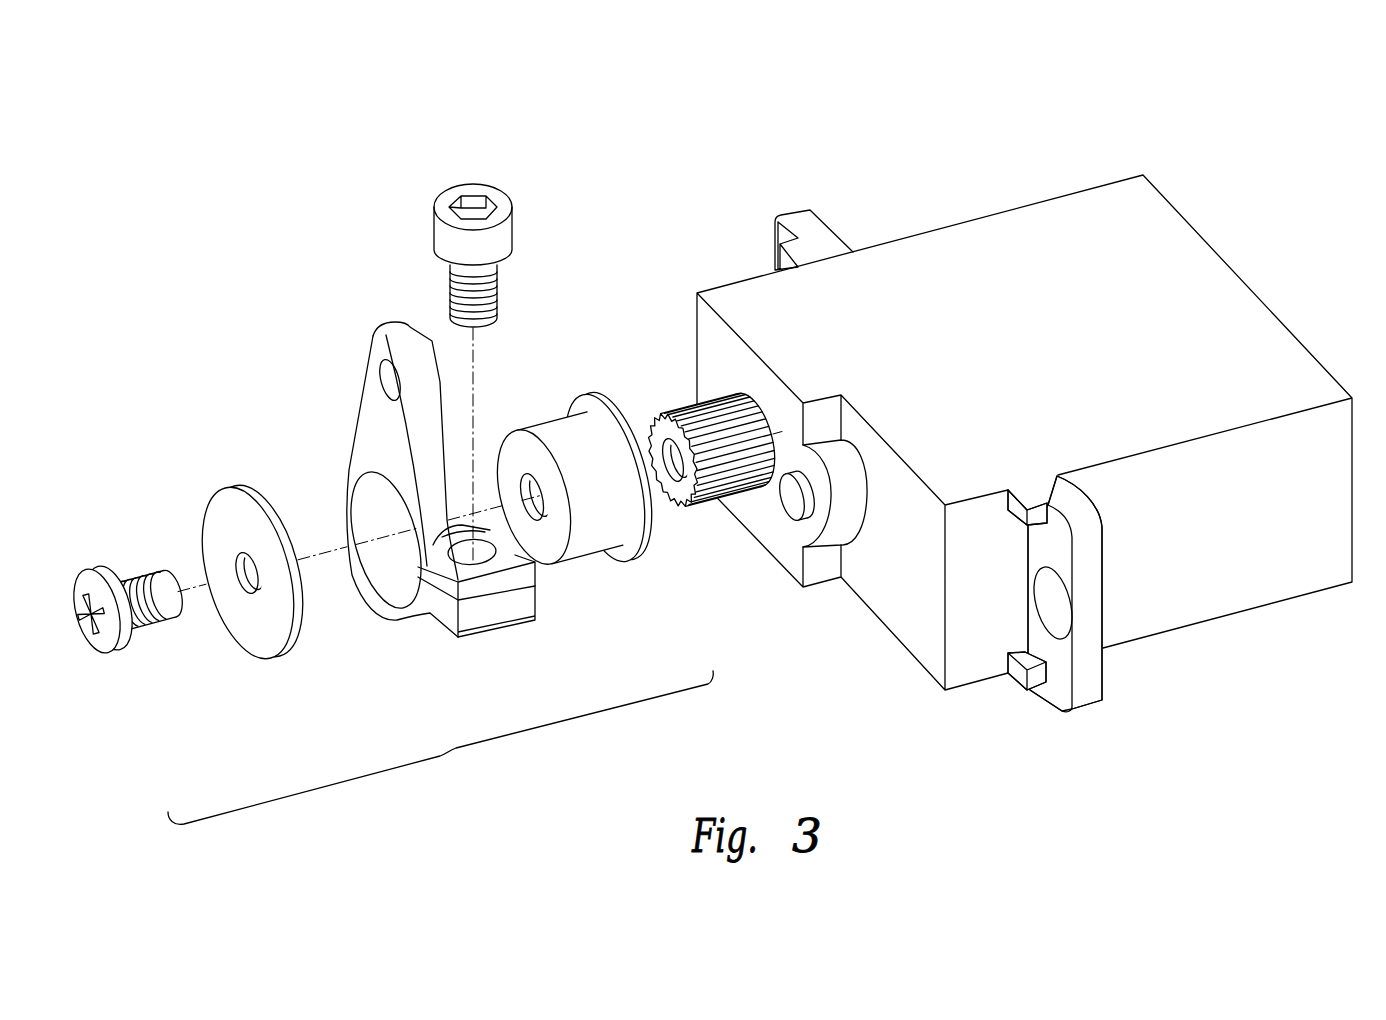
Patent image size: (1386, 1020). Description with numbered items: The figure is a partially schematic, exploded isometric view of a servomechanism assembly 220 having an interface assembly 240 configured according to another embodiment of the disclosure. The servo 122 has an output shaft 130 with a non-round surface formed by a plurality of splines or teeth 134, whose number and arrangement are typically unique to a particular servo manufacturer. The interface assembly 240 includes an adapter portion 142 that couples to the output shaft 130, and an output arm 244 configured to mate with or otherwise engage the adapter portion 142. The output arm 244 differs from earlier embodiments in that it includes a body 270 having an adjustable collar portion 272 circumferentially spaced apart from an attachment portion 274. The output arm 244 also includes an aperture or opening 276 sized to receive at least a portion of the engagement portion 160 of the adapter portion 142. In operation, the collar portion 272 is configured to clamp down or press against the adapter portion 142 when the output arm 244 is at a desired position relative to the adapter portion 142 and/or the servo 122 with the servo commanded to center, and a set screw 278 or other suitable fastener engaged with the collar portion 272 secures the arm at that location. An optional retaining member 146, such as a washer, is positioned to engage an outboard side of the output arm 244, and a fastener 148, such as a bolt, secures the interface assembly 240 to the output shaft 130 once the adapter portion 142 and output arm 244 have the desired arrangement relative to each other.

The servomechanism assembly 220 is at (684, 174).
The servo 122 is at (876, 242).
The splines or teeth 134 is at (690, 402).
The output shaft 130 is at (707, 512).
The engagement portion 160 is at (576, 471).
The adapter portion 142 is at (578, 568).
The body 270 is at (435, 483).
The attachment portion 274 is at (380, 345).
The aperture or opening 276 is at (375, 557).
The output arm 244 is at (505, 615).
The adjustable collar portion 272 is at (542, 570).
The set screw 278 is at (510, 237).
The retaining member 146 is at (252, 643).
The fastener 148 is at (103, 650).
The interface assembly 240 is at (456, 748).